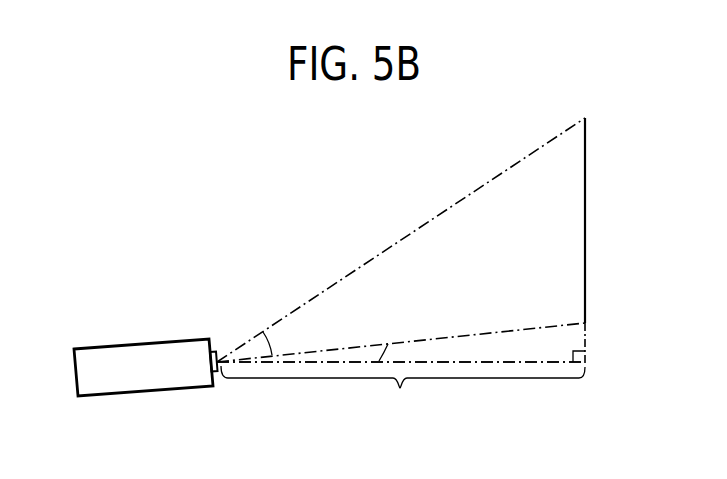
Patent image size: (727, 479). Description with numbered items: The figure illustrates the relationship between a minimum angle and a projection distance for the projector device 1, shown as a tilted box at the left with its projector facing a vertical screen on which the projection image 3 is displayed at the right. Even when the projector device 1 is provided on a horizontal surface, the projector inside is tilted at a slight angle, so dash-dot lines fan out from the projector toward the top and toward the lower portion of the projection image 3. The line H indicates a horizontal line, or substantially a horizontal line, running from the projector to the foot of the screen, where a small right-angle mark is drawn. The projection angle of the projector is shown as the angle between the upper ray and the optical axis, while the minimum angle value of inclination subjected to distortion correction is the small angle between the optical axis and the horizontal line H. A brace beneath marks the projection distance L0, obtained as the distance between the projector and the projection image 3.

The projector device 1 is at (141, 345).
The projection image 3 is at (586, 197).
The projection distance L0 is at (403, 393).
The horizontal line H is at (513, 362).